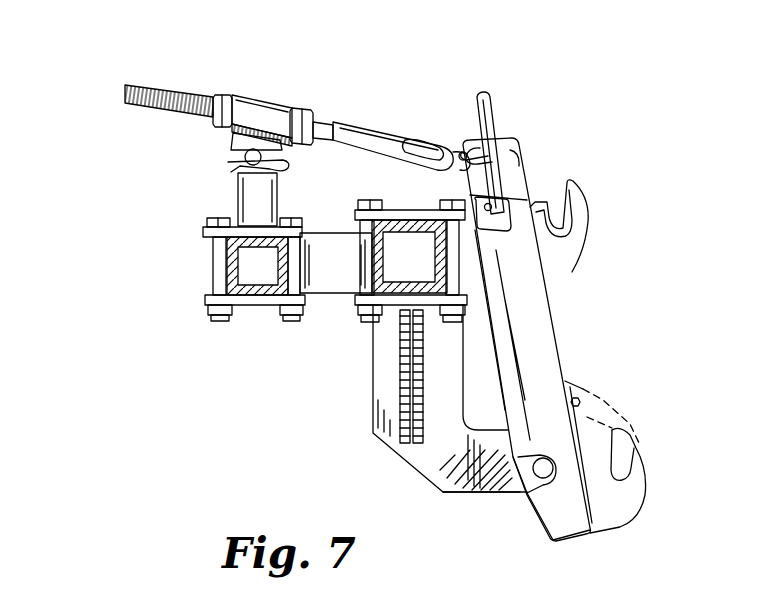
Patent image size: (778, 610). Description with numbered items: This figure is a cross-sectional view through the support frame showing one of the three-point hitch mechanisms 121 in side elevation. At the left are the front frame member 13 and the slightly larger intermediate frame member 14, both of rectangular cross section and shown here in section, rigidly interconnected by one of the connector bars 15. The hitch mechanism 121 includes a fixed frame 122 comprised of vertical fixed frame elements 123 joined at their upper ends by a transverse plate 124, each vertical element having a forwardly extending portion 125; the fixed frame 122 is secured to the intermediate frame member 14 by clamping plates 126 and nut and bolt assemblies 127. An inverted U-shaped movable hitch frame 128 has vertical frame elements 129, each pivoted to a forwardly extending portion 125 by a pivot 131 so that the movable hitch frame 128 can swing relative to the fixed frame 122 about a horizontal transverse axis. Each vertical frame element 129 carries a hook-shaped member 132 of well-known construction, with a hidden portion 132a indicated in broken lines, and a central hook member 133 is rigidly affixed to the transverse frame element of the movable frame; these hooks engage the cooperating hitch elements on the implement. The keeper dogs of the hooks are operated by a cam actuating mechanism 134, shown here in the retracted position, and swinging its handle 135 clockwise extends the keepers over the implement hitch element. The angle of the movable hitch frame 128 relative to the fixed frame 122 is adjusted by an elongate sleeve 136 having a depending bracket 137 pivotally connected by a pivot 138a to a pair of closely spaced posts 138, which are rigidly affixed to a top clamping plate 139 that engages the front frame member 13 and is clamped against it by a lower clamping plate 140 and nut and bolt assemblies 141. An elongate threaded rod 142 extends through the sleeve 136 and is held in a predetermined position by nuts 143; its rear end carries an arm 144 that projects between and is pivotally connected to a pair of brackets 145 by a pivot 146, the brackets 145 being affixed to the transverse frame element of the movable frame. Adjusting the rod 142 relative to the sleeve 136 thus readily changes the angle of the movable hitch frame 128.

The 3-point hitch mechanism 121 is at (626, 152).
The fixed frame 122 is at (372, 403).
The vertical fixed frame element 123 is at (467, 353).
The transverse plate 124 is at (385, 330).
The forwardly extending portion 125 is at (493, 493).
The clamping plate 126 is at (417, 194).
The nut and bolt assembly 127 is at (370, 327).
The movable hitch frame 128 is at (552, 310).
The vertical frame element 129 is at (545, 292).
The pivot 131 is at (540, 480).
The hook-shaped member 132 is at (637, 460).
The hidden hook portion 132a is at (618, 412).
The central hook member 133 is at (579, 187).
The cam actuating mechanism 134 is at (520, 197).
The handle 135 is at (480, 88).
The elongate sleeve 136 is at (249, 106).
The clevis 137 is at (227, 138).
The pivot 138a is at (243, 148).
The post 138 is at (278, 198).
The top clamping plate 139 is at (207, 233).
The lower clamping plate 140 is at (260, 306).
The nut and bolt assembly 141 is at (223, 327).
The elongate threaded rod 142 is at (124, 93).
The nut 143 is at (222, 94).
The arm 144 is at (447, 140).
The bracket 145 is at (508, 143).
The pivot 146 is at (470, 152).
The front frame member 13 is at (262, 246).
The intermediate frame member 14 is at (418, 236).
The connector bar 15 is at (330, 296).